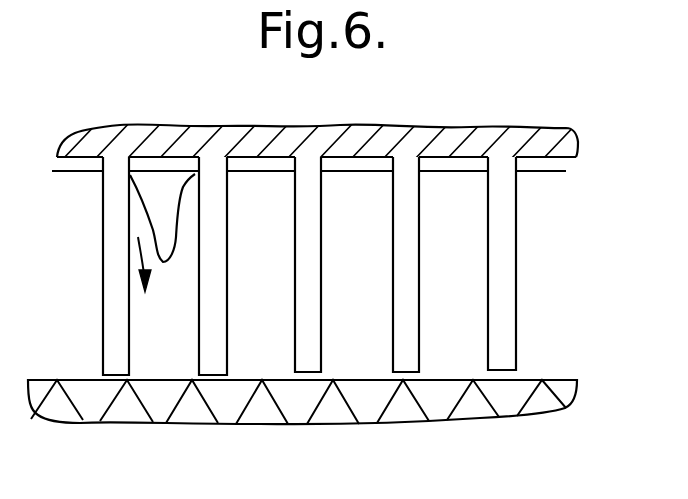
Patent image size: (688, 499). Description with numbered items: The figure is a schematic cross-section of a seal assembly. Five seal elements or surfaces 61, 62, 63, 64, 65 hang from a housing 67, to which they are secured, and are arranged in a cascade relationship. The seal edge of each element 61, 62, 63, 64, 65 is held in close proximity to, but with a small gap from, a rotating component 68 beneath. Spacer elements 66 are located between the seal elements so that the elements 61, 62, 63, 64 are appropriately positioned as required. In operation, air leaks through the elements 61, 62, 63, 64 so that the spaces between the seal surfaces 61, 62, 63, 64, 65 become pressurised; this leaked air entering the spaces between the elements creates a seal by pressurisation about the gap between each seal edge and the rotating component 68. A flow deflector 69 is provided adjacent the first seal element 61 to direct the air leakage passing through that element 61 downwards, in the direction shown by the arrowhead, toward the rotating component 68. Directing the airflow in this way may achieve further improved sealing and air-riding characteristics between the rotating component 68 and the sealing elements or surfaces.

The seal element 61 is at (112, 168).
The seal element 62 is at (219, 362).
The seal element 63 is at (307, 175).
The seal element 64 is at (405, 360).
The seal element 65 is at (500, 167).
The spacer elements 66 is at (240, 167).
The housing 67 is at (538, 143).
The rotating component 68 is at (518, 395).
The flow deflector 69 is at (164, 207).